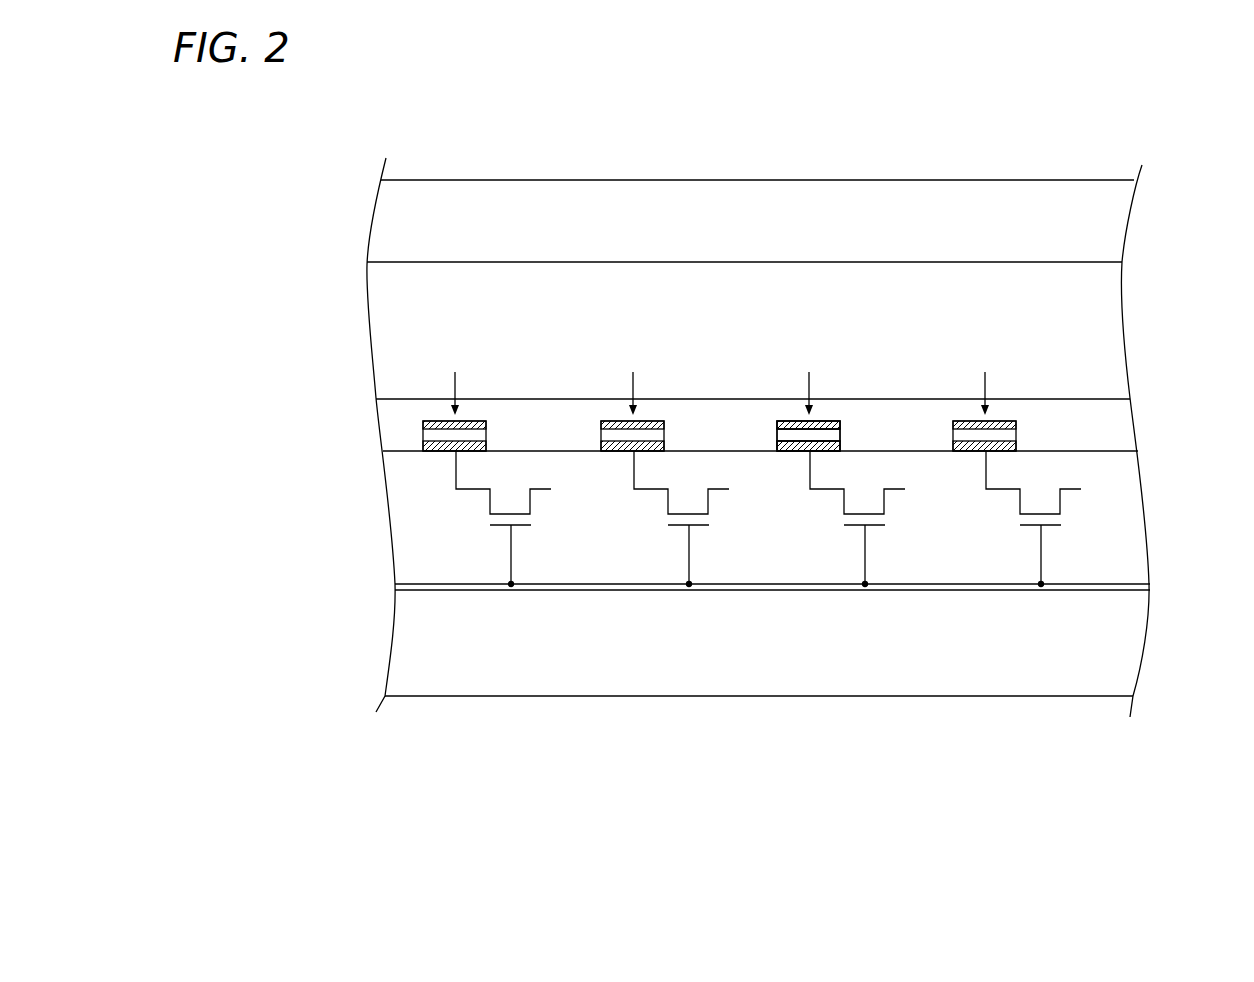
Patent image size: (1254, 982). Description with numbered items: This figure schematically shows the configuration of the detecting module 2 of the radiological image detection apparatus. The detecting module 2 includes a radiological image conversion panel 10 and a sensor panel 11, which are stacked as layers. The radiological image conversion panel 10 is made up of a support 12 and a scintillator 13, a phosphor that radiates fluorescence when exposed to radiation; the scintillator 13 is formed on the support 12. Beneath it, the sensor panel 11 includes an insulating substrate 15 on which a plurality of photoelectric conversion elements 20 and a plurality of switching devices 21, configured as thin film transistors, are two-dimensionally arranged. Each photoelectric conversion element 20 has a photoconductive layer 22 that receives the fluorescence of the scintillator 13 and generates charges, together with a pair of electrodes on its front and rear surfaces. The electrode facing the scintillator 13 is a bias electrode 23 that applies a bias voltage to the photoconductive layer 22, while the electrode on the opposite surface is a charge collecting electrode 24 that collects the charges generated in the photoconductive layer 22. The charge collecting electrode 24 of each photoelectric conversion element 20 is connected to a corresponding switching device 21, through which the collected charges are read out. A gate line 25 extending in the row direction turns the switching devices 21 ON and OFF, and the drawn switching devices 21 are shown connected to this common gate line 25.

The detecting module 2 is at (1250, 114).
The radiological image conversion panel 10 is at (1092, 152).
The sensor panel 11 is at (450, 710).
The support 12 is at (1108, 226).
The scintillator 13 is at (1108, 331).
The insulating substrate 15 is at (1128, 646).
The photoelectric conversion element 20 is at (494, 429).
The switching device 21 is at (539, 498).
The photoconductive layer 22 is at (839, 435).
The bias electrode 23 is at (839, 425).
The charge collecting electrode 24 is at (839, 446).
The gate line 25 is at (410, 583).